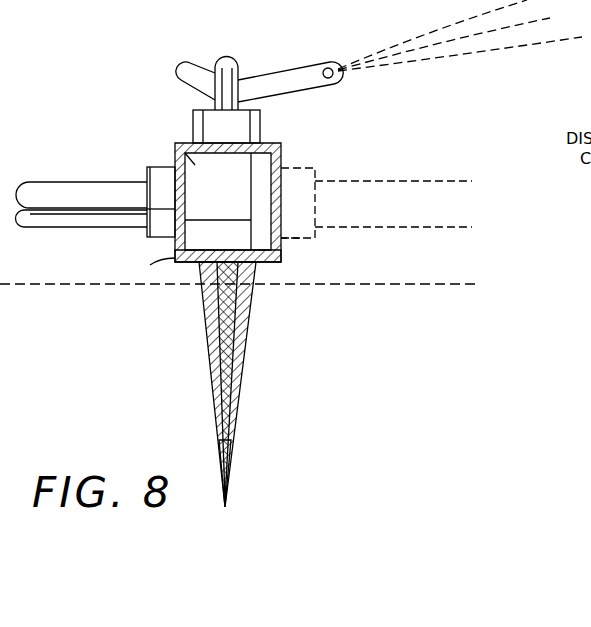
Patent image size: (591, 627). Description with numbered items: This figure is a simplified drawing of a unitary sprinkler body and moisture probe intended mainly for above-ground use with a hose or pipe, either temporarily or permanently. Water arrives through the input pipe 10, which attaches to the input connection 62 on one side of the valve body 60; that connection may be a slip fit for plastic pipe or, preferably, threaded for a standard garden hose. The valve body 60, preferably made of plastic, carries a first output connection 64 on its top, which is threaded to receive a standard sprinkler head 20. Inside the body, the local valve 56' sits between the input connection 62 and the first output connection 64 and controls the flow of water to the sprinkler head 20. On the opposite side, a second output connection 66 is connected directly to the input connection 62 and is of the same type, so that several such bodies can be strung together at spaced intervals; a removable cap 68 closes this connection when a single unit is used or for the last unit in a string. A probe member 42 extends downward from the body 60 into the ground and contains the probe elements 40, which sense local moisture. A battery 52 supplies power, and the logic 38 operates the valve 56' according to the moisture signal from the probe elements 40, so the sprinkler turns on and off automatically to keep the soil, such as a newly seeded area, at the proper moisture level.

The input pipe 10 is at (68, 182).
The sprinkler head 20 is at (236, 72).
The logic 38 is at (160, 265).
The probe elements 40 is at (212, 385).
The probe member 42 is at (235, 442).
The battery 52 is at (270, 262).
The local valve 56' is at (158, 120).
The valve body 60 is at (283, 155).
The input connection 62 is at (148, 170).
The first output connection 64 is at (262, 138).
The second output connection 66 is at (302, 239).
The removable cap 68 is at (317, 197).